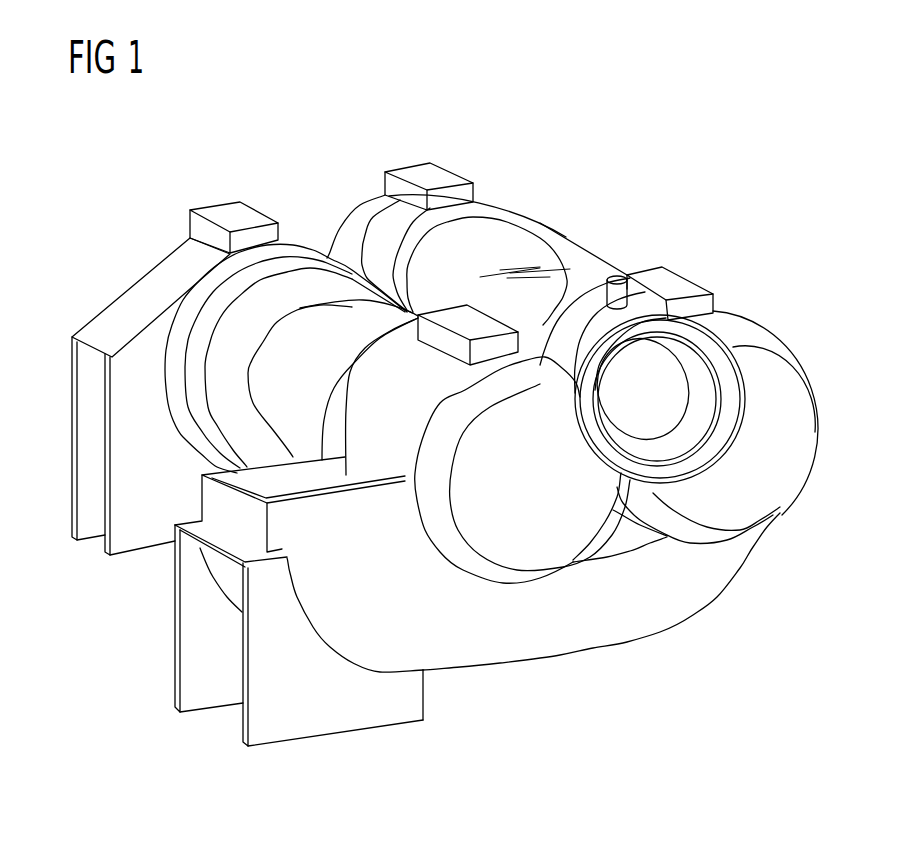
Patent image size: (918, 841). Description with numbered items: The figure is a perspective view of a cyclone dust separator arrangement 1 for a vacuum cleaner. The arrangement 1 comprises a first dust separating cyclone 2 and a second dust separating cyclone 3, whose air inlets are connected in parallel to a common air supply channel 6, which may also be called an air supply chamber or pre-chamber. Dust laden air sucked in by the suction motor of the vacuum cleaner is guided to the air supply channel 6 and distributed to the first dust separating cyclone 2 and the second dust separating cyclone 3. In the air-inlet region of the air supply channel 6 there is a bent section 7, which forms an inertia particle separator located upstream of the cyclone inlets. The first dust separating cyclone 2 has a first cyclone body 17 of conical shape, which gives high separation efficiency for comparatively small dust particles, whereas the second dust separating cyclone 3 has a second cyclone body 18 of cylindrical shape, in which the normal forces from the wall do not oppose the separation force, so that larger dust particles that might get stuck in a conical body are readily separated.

The cyclone dust separator arrangement 1 is at (552, 157).
The first dust separating cyclone 2 is at (307, 293).
The second dust separating cyclone 3 is at (400, 247).
The air supply channel 6 is at (370, 640).
The bent section 7 is at (325, 645).
The first cyclone body 17 is at (273, 388).
The second cyclone body 18 is at (583, 262).